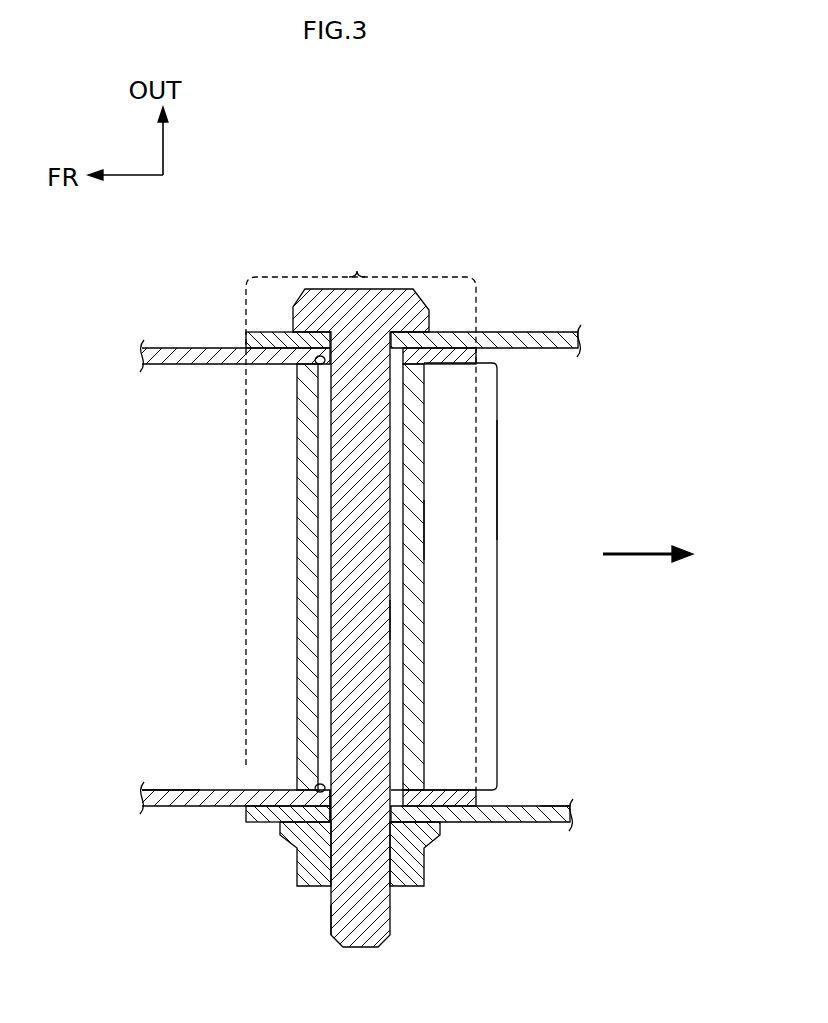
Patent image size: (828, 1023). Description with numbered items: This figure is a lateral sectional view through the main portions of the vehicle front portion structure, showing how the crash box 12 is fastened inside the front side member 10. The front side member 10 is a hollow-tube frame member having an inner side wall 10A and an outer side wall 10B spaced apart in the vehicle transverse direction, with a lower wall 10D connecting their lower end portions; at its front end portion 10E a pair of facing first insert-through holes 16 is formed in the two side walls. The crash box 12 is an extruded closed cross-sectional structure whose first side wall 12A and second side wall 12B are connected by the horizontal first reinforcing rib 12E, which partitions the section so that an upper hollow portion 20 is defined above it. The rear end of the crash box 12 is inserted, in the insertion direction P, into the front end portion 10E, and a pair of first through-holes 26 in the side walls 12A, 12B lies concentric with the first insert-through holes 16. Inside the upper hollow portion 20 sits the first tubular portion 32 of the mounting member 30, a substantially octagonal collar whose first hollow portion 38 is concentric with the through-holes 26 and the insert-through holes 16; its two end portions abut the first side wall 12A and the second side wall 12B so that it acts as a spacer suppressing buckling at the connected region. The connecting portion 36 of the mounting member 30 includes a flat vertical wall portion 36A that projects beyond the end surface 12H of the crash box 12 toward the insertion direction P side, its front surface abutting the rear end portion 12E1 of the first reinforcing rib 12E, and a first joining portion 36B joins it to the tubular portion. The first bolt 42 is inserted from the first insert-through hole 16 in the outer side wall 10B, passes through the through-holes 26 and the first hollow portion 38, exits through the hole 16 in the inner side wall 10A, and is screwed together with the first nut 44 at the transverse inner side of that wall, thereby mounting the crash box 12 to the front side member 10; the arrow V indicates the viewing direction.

The front side member 10 is at (537, 250).
The inner side wall 10A is at (483, 822).
The outer side wall 10B is at (517, 332).
The lower wall 10D is at (533, 805).
The front end portion 10E is at (361, 514).
The crash box 12 is at (155, 300).
The first side wall 12A is at (207, 808).
The second side wall 12B is at (200, 348).
The first reinforcing rib 12E is at (155, 745).
The rear end portion of the first reinforcing rib 12E1 is at (448, 670).
The end surface 12H is at (477, 720).
The first insert-through hole 16 is at (423, 307).
The upper hollow portion 20 is at (143, 571).
The first through-hole 26 is at (325, 362).
The mounting member 30 is at (468, 576).
The first tubular portion 32 is at (415, 402).
The connecting portion 36 is at (500, 426).
The vertical wall portion 36A is at (487, 483).
The first joining portion 36B is at (450, 540).
The first hollow portion 38 is at (400, 618).
The first bolt 42 is at (331, 905).
The first nut 44 is at (297, 862).
The viewing direction V is at (370, 178).
The insertion direction P is at (640, 552).